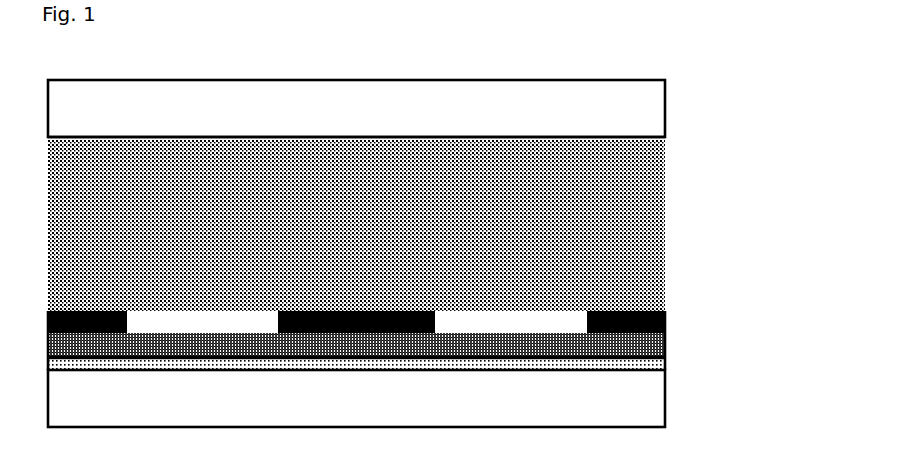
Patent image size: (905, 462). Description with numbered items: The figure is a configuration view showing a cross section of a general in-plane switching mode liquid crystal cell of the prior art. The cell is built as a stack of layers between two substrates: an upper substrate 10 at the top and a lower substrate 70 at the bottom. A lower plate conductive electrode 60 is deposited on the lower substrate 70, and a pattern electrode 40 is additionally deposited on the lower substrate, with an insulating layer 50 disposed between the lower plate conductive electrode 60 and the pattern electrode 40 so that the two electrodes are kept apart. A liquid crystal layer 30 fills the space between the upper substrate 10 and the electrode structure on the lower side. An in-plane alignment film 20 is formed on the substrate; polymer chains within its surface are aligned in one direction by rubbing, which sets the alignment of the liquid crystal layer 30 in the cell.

The upper substrate 10 is at (645, 112).
The in-plane alignment film 20 is at (665, 137).
The liquid crystal layer 30 is at (670, 150).
The pattern electrode 40 is at (665, 325).
The insulating layer 50 is at (665, 349).
The lower plate conductive electrode 60 is at (665, 366).
The lower substrate 70 is at (645, 390).